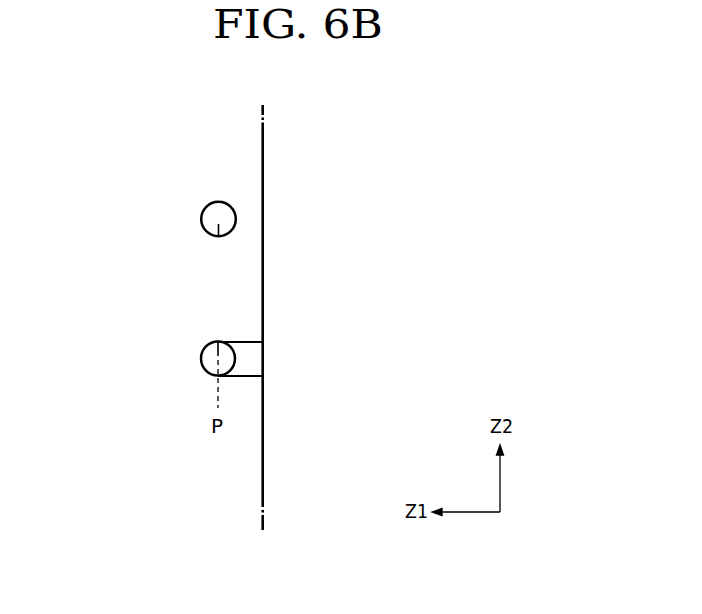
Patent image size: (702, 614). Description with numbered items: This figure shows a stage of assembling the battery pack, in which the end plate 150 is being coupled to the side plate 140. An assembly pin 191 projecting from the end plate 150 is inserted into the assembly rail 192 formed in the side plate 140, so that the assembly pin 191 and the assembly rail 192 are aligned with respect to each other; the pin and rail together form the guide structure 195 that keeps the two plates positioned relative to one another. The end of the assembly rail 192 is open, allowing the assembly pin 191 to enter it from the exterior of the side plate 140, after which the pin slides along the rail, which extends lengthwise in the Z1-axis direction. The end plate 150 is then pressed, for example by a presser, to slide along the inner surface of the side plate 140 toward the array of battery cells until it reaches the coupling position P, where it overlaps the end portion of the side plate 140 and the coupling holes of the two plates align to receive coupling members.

The side plate 140 is at (195, 317).
The assembly pin 191 is at (220, 342).
The assembly rail 192 is at (244, 343).
The guide unit 195 is at (311, 339).
The end plate 150 is at (269, 371).